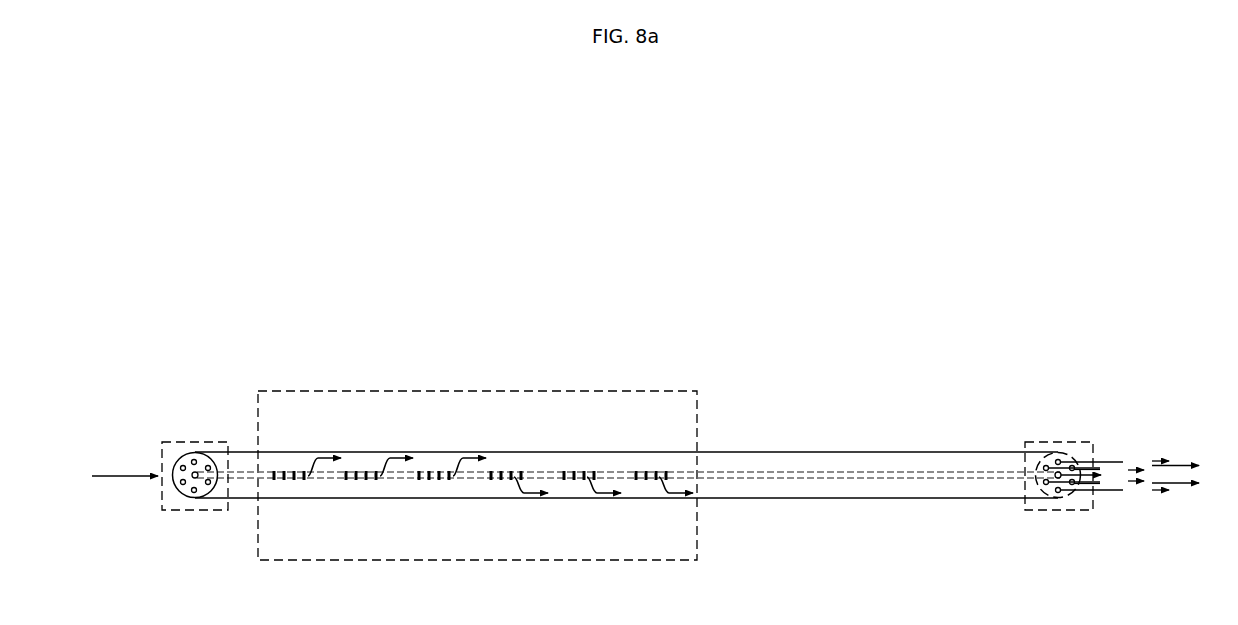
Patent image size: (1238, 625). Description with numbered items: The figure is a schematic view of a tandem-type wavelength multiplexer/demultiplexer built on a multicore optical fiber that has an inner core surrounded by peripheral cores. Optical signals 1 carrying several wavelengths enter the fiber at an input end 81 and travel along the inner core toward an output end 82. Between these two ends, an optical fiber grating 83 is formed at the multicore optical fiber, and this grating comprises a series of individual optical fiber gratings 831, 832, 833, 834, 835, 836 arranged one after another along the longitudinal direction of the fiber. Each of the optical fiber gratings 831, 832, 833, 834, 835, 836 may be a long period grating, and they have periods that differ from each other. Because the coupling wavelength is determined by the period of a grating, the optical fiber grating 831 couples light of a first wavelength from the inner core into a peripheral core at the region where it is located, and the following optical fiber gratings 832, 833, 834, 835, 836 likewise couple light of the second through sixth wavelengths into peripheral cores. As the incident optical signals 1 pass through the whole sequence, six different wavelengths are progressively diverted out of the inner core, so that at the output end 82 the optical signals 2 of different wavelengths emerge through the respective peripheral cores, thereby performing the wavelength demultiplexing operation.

The optical signals 1 is at (120, 480).
The optical signals 2 is at (1085, 470).
The input end 81 is at (212, 441).
The output end 82 is at (1077, 441).
The optical fiber grating 83 is at (410, 390).
The optical fiber grating 831 is at (275, 482).
The optical fiber grating 832 is at (347, 482).
The optical fiber grating 833 is at (420, 482).
The optical fiber grating 834 is at (502, 471).
The optical fiber grating 835 is at (575, 471).
The optical fiber grating 836 is at (637, 471).